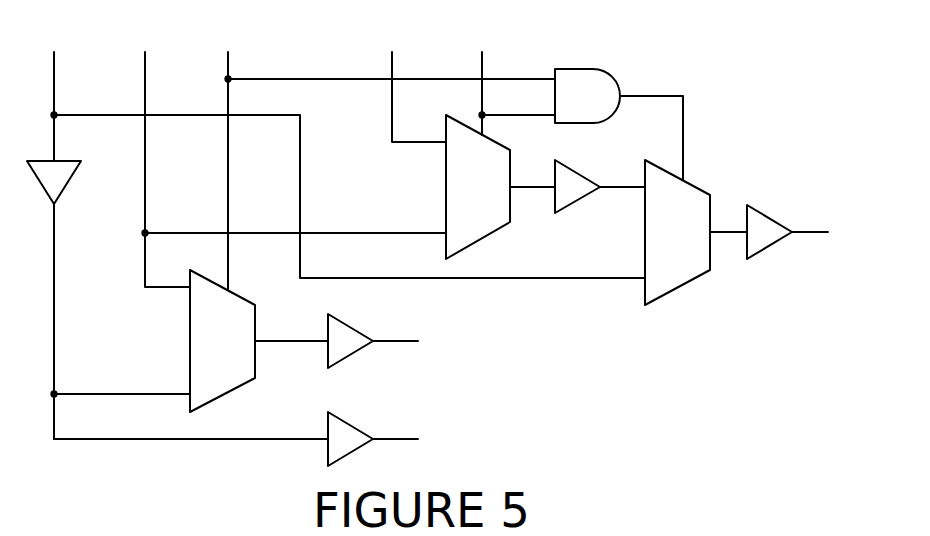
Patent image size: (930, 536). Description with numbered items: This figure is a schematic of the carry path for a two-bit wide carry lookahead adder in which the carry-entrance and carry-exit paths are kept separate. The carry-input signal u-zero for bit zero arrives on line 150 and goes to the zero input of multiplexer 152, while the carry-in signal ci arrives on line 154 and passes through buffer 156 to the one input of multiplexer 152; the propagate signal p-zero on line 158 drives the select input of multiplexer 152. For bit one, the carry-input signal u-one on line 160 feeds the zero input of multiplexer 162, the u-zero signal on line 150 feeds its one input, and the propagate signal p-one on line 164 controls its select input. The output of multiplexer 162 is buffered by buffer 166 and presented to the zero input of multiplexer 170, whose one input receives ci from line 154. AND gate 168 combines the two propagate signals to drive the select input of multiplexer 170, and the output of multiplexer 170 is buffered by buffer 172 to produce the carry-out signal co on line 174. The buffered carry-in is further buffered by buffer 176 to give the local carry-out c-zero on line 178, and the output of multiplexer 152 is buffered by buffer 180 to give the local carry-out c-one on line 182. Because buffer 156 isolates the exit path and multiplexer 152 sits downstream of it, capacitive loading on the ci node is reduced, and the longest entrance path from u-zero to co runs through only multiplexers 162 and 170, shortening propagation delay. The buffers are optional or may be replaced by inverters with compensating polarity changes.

The line 150 is at (289, 156).
The multiplexer 152 is at (259, 332).
The line 154 is at (344, 152).
The buffer 156 is at (167, 300).
The line 158 is at (385, 158).
The line 160 is at (415, 84).
The multiplexer 162 is at (500, 194).
The line 164 is at (514, 80).
The buffer 166 is at (600, 175).
The AND gate 168 is at (619, 104).
The multiplexer 170 is at (696, 224).
The buffer 172 is at (774, 215).
The line 174 is at (826, 215).
The buffer 176 is at (355, 424).
The line 178 is at (411, 421).
The buffer 180 is at (359, 329).
The line 182 is at (411, 324).